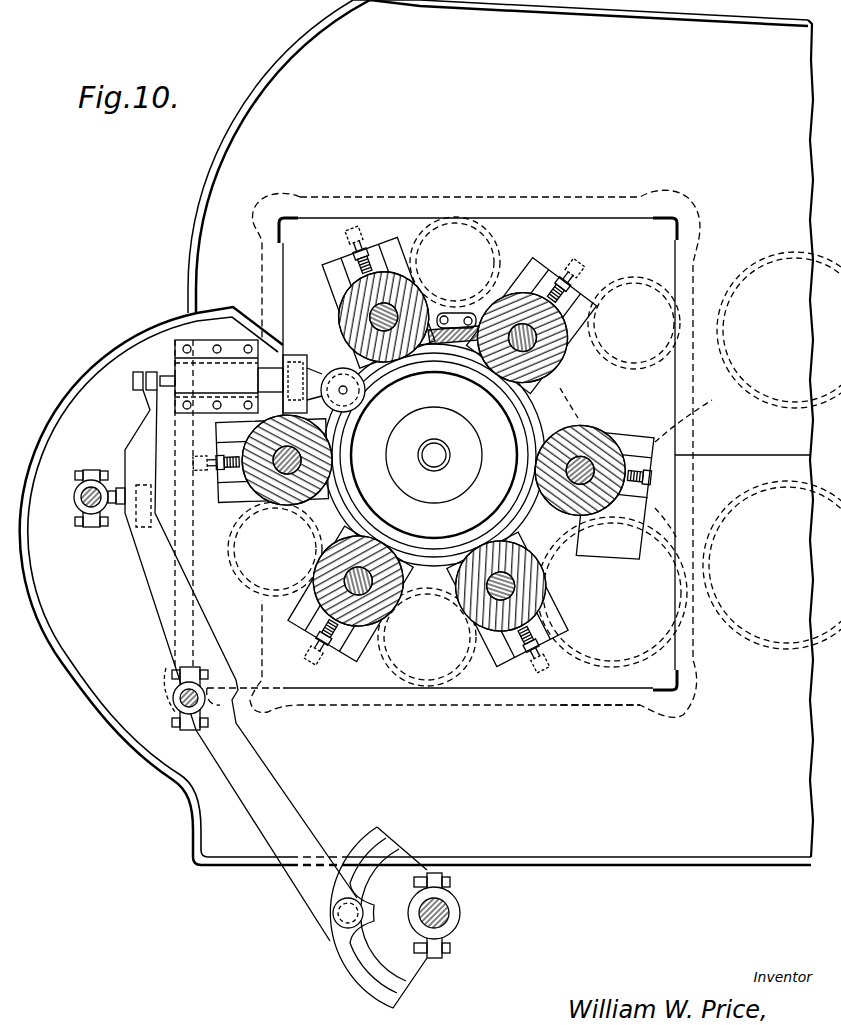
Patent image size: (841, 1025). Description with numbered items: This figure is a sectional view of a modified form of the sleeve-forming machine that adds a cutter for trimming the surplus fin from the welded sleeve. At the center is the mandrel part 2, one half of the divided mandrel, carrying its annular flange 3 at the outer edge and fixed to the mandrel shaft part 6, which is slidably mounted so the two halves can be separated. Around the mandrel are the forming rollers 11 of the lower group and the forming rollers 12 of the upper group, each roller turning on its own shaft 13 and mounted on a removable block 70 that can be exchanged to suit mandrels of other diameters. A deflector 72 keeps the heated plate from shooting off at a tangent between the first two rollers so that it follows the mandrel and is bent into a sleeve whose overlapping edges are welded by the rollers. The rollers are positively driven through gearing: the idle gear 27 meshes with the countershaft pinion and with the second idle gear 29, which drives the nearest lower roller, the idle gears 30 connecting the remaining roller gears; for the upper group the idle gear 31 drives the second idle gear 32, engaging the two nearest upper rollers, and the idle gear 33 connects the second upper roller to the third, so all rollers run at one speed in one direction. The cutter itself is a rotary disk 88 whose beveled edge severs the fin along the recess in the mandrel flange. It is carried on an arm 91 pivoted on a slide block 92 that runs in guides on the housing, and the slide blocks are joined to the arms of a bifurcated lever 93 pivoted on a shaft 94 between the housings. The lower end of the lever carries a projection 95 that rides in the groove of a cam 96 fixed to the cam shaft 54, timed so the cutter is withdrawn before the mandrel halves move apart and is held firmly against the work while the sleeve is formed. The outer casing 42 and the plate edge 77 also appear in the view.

The mandrel part 2 is at (473, 433).
The annular flange 3 is at (176, 320).
The mandrel shaft part 6 is at (450, 449).
The forming rollers 11 is at (366, 540).
The forming rollers 12 is at (490, 360).
The roller shaft 13 is at (398, 303).
The idle gear 27 is at (760, 648).
The second idle gear 29 is at (584, 658).
The idle gears 30 is at (263, 600).
The idle gear 31 is at (753, 268).
The second idle gear 32 is at (633, 278).
The idle gear 33 is at (508, 248).
The outer casing 42 is at (300, 78).
The cam shaft 54 is at (449, 907).
The removable block 70 is at (522, 230).
The deflector 72 is at (458, 313).
The plate edge 77 is at (586, 690).
The cutter disk 88 is at (365, 407).
The arm 91 is at (313, 368).
The slide block 92 is at (268, 368).
The bifurcated lever 93 is at (164, 582).
The shaft 94 is at (178, 694).
The projection 95 is at (333, 931).
The cam 96 is at (378, 988).